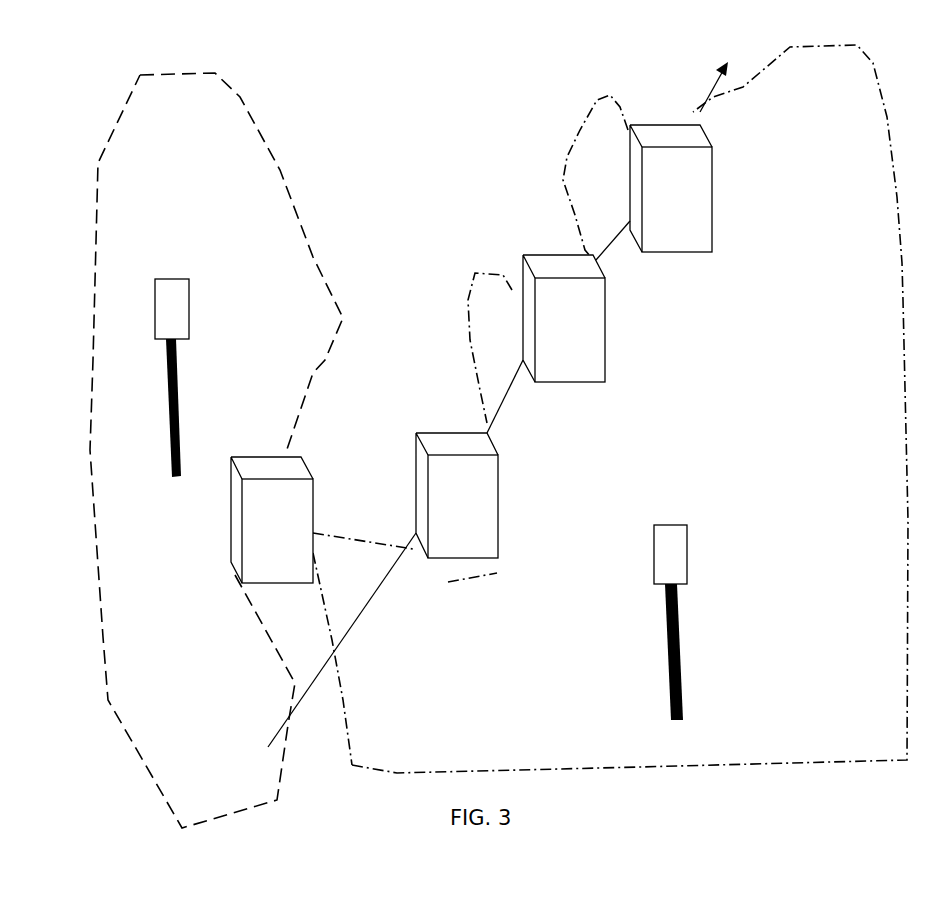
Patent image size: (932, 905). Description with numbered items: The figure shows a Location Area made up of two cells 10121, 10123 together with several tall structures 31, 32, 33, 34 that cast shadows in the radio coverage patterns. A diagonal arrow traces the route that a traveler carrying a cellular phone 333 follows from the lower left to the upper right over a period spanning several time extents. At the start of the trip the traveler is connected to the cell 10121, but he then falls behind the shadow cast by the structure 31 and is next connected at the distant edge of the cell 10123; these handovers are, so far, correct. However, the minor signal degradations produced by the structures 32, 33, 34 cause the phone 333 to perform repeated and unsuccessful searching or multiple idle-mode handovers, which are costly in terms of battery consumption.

The tall structure 31 is at (272, 520).
The tall structure 32 is at (457, 495).
The tall structure 33 is at (564, 318).
The tall structure 34 is at (671, 188).
The cellular phone 333 is at (723, 77).
The cell 10121 is at (216, 450).
The cell 10123 is at (610, 409).